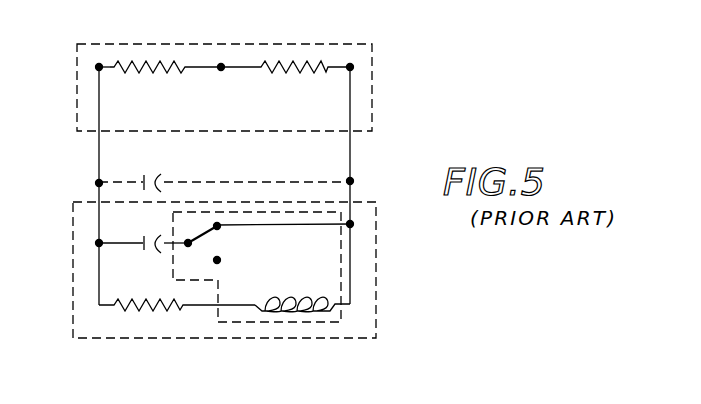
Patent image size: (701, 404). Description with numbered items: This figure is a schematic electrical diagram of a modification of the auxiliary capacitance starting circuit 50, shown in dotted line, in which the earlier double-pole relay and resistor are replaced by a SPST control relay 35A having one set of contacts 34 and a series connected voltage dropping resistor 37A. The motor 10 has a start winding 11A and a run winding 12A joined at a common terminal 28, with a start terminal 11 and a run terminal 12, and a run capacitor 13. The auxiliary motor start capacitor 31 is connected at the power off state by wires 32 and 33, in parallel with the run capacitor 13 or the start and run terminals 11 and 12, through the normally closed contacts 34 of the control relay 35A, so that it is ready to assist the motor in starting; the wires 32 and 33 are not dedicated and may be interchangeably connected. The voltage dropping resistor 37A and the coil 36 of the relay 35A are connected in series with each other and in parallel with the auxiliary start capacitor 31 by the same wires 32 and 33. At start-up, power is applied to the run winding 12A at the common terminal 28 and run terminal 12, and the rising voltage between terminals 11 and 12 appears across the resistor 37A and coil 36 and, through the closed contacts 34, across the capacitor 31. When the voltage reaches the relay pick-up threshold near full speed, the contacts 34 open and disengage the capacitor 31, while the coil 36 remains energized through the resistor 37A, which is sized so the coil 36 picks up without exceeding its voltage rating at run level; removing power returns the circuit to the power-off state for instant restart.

The motor 10 is at (378, 91).
The start terminal 11 is at (97, 66).
The start winding 11A is at (147, 72).
The run terminal 12 is at (352, 66).
The run winding 12A is at (290, 72).
The run capacitor 13 is at (150, 176).
The common terminal 28 is at (221, 72).
The auxiliary motor start capacitor 31 is at (150, 254).
The wire 32 is at (99, 150).
The wire 33 is at (352, 138).
The set of contacts 34 is at (216, 242).
The SPST control relay 35A is at (277, 208).
The coil 36 is at (296, 296).
The voltage dropping resistor 37A is at (146, 310).
The auxiliary capacitance starting apparatus 50 is at (379, 287).